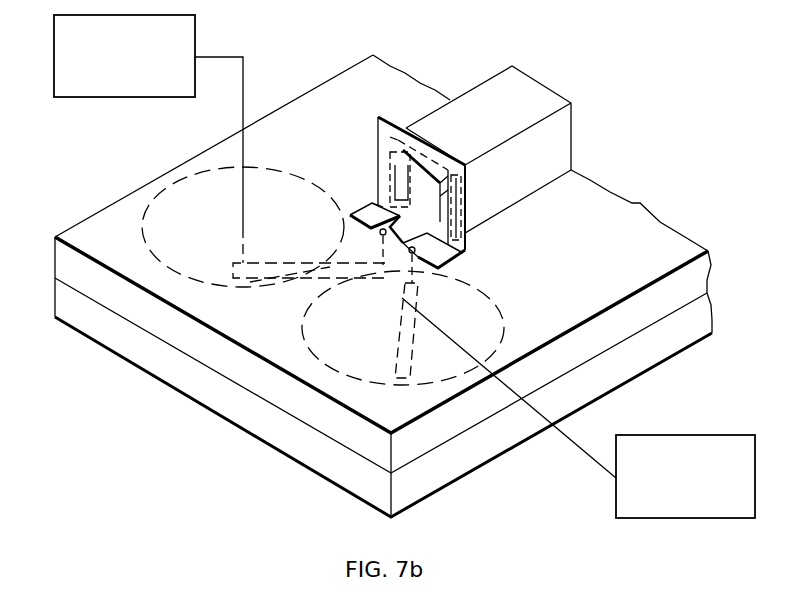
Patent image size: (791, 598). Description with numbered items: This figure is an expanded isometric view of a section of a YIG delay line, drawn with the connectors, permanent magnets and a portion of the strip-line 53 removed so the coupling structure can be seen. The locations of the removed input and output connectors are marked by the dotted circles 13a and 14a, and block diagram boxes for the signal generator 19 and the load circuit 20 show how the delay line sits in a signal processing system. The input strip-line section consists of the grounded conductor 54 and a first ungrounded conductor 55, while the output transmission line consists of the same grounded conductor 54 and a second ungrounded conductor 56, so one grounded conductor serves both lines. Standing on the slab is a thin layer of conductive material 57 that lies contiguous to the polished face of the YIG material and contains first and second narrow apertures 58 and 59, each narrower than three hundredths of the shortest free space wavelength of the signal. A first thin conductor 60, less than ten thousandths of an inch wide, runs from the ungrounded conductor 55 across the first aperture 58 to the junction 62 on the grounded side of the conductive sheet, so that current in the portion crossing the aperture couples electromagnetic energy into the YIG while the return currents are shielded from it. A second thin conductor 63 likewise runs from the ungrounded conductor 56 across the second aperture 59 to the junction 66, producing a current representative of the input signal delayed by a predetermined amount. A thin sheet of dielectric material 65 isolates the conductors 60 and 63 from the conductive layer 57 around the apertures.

The strip-line 53 is at (50, 233).
The grounded conductor 54 is at (118, 205).
The dotted circle 13a is at (142, 228).
The dotted circle 14a is at (505, 315).
The signal generator 19 is at (78, 98).
The load circuit 20 is at (722, 435).
The first ungrounded conductor 55 is at (320, 281).
The ungrounded conductor 56 is at (400, 352).
The thin layer of conductive material 57 is at (393, 118).
The first narrow aperture 58 is at (397, 177).
The second narrow aperture 59 is at (442, 220).
The first thin conductor 60 is at (387, 216).
The junction 62 is at (410, 153).
The second thin conductor 63 is at (458, 256).
The thin sheet of dielectric material 65 is at (457, 190).
The junction 66 is at (447, 160).